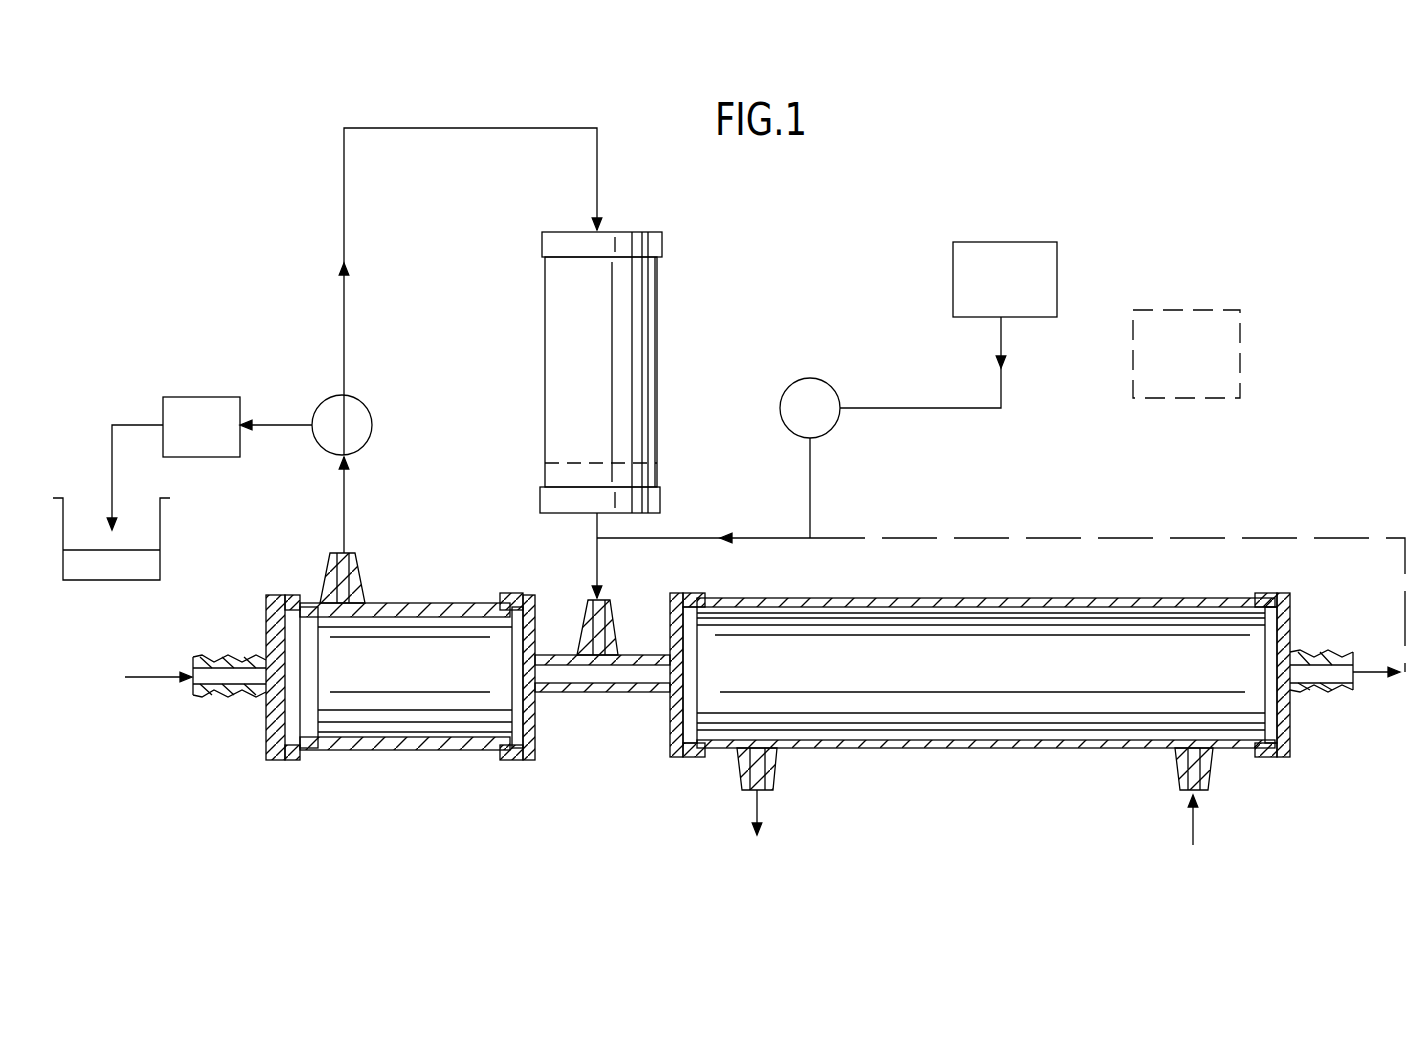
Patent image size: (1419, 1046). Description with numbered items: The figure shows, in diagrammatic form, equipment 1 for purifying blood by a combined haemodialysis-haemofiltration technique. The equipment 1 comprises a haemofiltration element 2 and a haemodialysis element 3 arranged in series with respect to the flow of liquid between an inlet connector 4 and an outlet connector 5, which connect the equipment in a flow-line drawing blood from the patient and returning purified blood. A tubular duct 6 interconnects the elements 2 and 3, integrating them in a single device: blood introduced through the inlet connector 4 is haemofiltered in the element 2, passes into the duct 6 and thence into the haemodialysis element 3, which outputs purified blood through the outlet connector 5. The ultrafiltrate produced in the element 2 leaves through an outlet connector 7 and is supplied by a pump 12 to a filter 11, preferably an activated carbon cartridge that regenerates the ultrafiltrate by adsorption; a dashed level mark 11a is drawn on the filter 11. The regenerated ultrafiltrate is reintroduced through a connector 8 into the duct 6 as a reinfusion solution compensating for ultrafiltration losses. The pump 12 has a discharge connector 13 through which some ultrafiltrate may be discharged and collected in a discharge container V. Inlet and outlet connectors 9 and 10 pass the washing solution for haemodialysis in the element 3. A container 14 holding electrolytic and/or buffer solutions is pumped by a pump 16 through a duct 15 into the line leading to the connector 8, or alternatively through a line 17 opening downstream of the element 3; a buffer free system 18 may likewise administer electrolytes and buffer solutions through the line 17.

The equipment 1 is at (762, 651).
The haemofiltration element 2 is at (358, 722).
The haemodialysis element 3 is at (1003, 712).
The inlet connector 4 is at (146, 678).
The outlet connector 5 is at (1360, 673).
The tubular duct 6 is at (610, 692).
The outlet connector 7 is at (348, 580).
The connector 8 is at (612, 612).
The inlet connector 9 is at (1197, 768).
The outlet connector 10 is at (757, 772).
The filter 11 is at (645, 292).
The level mark 11a is at (553, 478).
The pump 12 is at (352, 408).
The discharge connector 13 is at (184, 400).
The container 14 is at (1038, 243).
The duct 15 is at (672, 538).
The pump 16 is at (806, 393).
The line 17 is at (1073, 535).
The buffer free system 18 is at (1232, 312).
The discharge container V is at (110, 567).